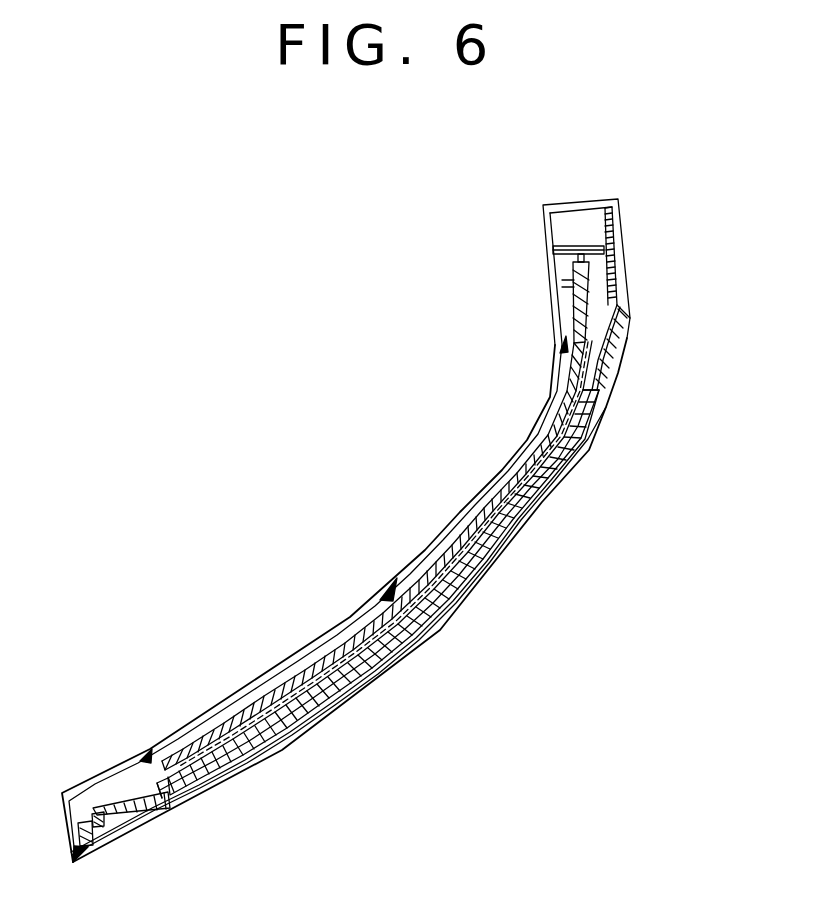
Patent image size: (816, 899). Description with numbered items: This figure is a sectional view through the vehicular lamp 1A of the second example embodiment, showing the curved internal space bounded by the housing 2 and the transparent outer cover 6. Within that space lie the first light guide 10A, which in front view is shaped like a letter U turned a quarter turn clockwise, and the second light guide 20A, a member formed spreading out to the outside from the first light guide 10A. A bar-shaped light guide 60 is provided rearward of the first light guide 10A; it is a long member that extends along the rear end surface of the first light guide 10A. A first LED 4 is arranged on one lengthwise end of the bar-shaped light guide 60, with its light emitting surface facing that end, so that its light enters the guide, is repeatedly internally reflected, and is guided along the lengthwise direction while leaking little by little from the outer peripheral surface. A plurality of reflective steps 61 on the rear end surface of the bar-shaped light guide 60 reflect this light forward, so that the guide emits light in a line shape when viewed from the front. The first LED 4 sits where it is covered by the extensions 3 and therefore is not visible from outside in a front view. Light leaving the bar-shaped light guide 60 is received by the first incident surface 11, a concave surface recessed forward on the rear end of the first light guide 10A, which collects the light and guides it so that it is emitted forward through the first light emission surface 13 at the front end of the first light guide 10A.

The housing 2 is at (619, 228).
The first LED 4 is at (596, 259).
The bar-shaped light guide 60 is at (592, 293).
The extension 3 is at (631, 324).
The outer cover 6 is at (620, 365).
The vehicular lamp 1A is at (636, 483).
The first incident surface 11 is at (480, 553).
The first light emission surface 13 is at (528, 508).
The first light guide 10A is at (484, 575).
The reflective steps 61 is at (253, 700).
The second light guide 20A is at (145, 806).